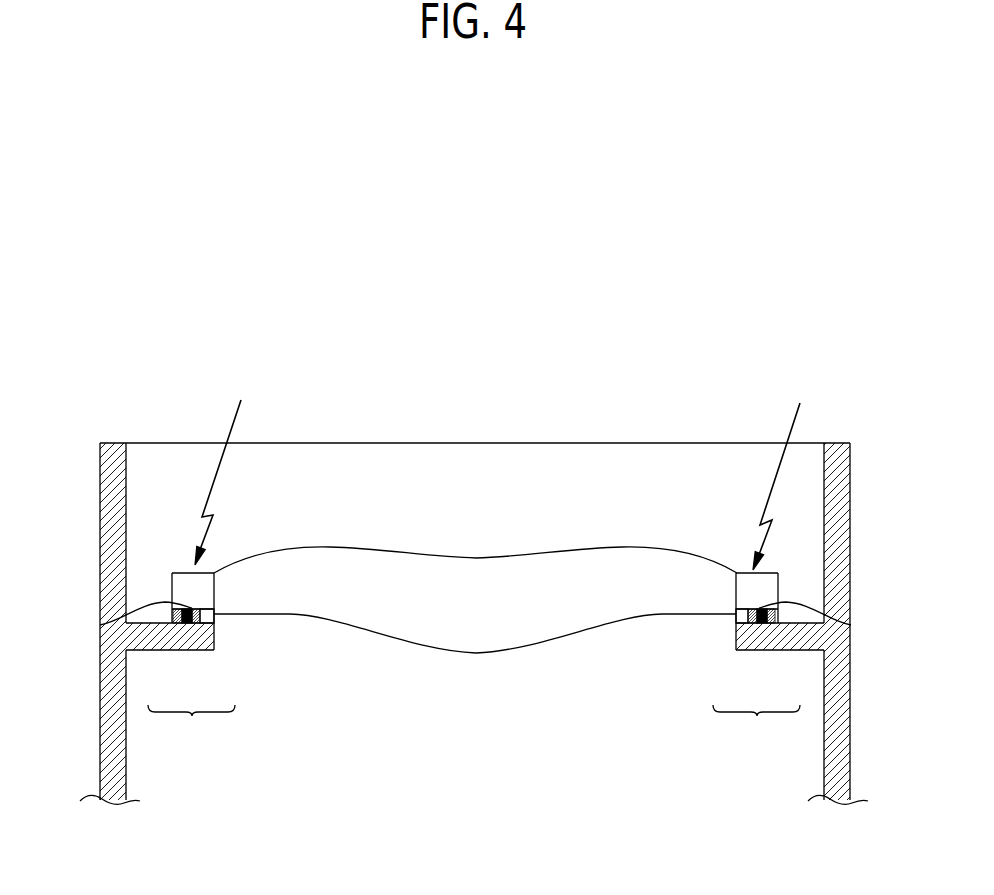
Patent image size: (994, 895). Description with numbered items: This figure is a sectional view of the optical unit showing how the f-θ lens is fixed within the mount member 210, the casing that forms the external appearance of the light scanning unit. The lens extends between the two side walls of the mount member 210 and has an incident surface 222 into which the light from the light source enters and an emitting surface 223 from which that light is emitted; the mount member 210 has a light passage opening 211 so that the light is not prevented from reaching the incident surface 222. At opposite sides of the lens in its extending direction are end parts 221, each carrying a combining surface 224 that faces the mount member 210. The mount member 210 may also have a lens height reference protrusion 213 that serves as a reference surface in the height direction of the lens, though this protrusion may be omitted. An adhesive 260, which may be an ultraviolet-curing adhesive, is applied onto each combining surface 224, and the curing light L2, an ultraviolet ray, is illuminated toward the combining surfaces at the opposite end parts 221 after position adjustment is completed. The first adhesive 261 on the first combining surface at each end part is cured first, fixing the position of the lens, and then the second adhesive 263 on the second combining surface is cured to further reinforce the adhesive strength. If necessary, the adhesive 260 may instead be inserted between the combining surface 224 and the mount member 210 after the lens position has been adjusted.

The mount member 210 is at (110, 535).
The light passage opening 211 is at (216, 647).
The lens height reference protrusion 213 is at (214, 622).
The end parts 221 is at (185, 582).
The incident surface 222 is at (474, 655).
The emitting surface 223 is at (478, 557).
The combining surface 224 is at (100, 625).
The adhesive 260 is at (474, 724).
The first adhesive 261 is at (187, 626).
The second adhesive 263 is at (178, 626).
The curing light L2 is at (242, 412).